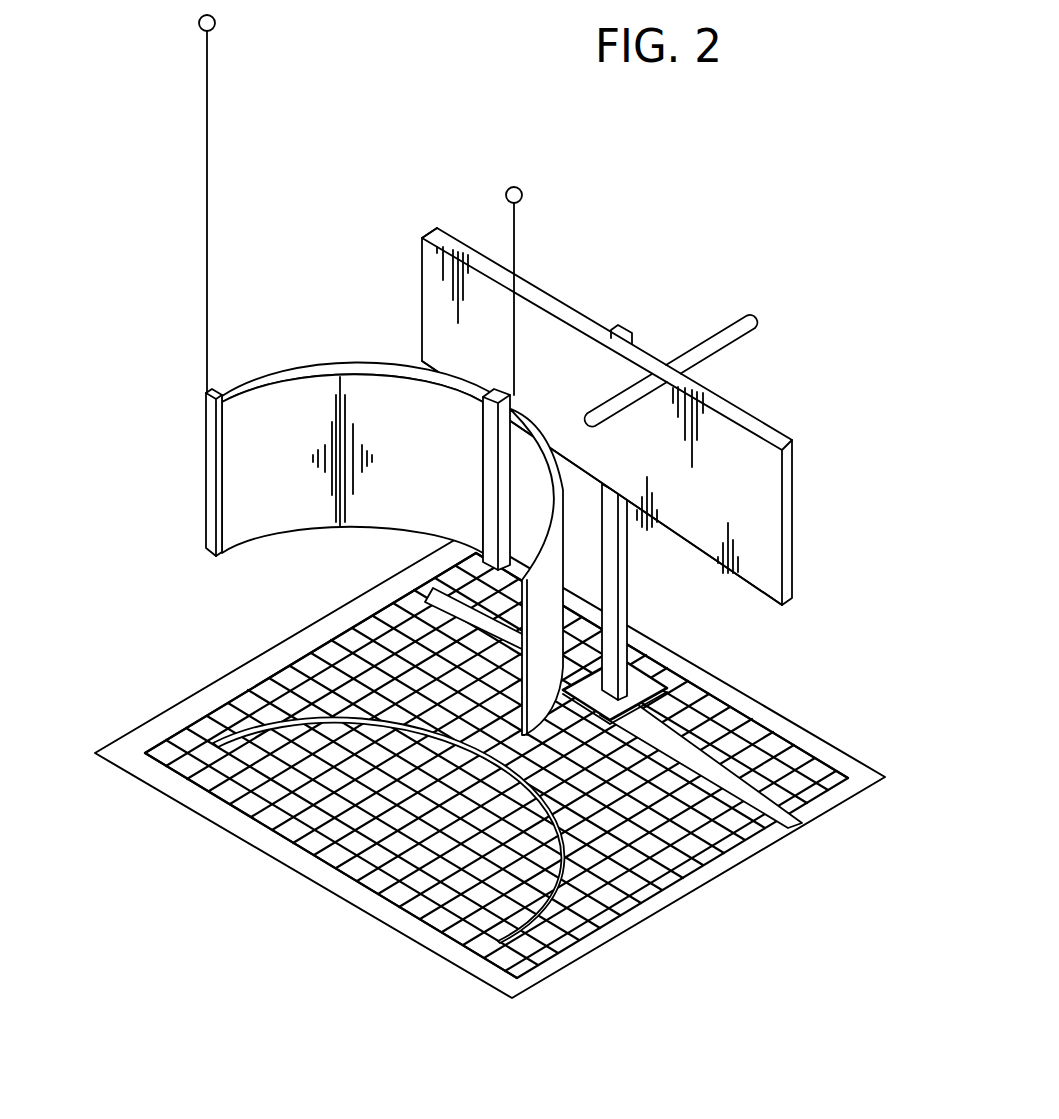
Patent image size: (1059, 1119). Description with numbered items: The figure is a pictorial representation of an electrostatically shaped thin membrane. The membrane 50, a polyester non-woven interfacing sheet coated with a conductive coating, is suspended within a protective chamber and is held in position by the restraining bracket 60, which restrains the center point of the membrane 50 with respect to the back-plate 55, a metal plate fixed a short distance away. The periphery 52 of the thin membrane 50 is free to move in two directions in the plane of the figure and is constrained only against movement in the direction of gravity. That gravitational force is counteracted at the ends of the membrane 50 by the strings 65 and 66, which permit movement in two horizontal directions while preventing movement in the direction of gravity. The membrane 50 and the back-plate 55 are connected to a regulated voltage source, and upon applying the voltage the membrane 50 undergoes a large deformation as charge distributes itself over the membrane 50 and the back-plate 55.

The membrane 50 is at (186, 499).
The periphery 52 is at (205, 434).
The back-plate 55 is at (796, 515).
The restraining bracket 60 is at (593, 423).
The string 65 is at (208, 110).
The string 66 is at (516, 243).